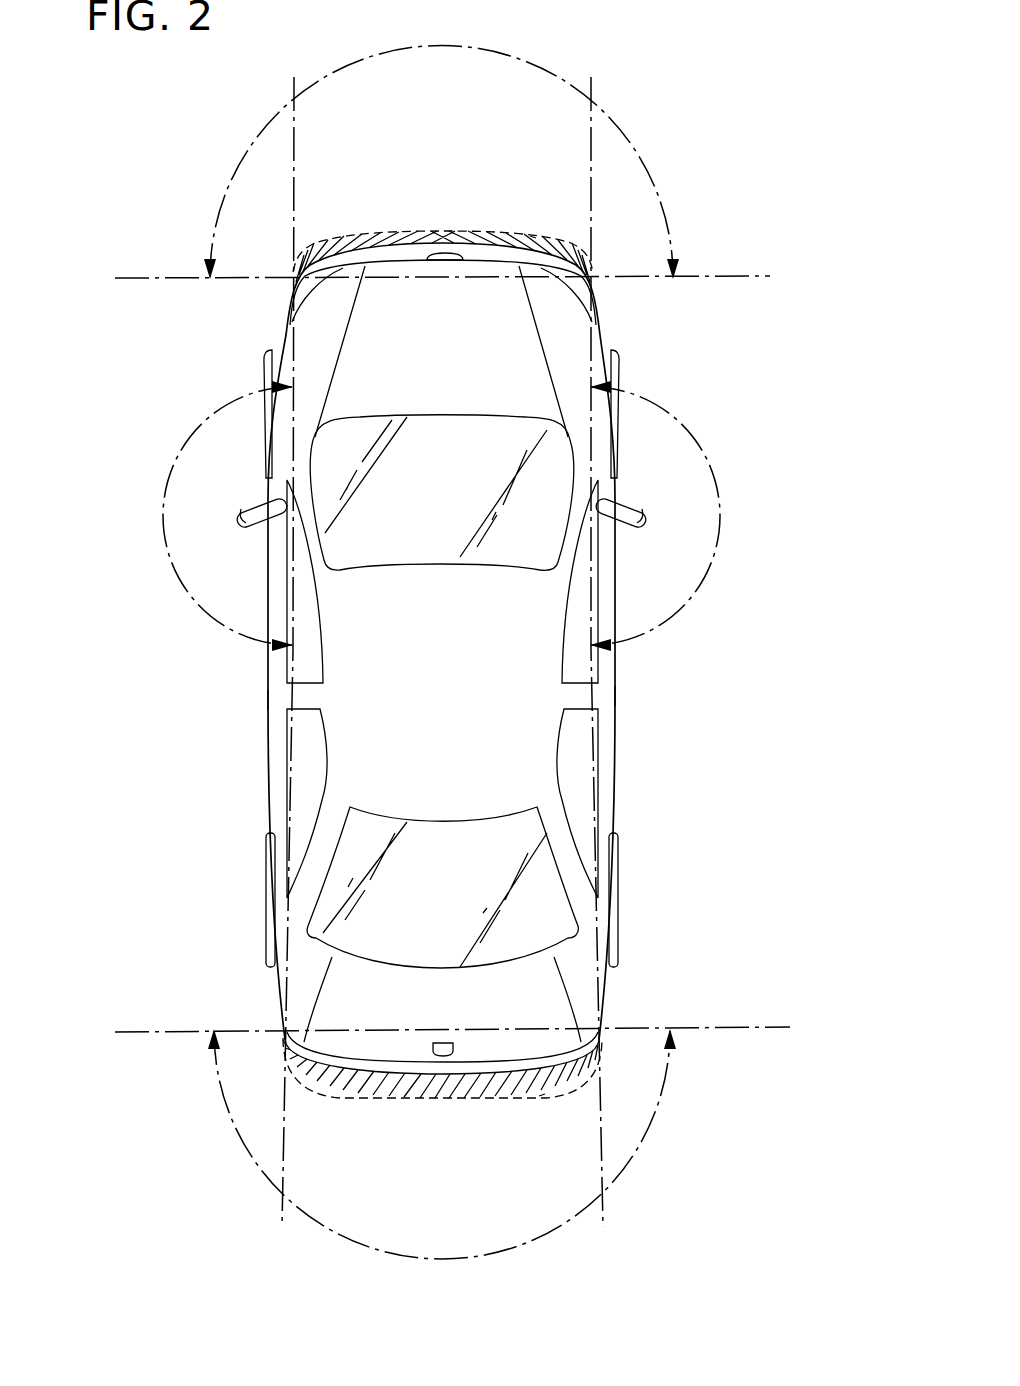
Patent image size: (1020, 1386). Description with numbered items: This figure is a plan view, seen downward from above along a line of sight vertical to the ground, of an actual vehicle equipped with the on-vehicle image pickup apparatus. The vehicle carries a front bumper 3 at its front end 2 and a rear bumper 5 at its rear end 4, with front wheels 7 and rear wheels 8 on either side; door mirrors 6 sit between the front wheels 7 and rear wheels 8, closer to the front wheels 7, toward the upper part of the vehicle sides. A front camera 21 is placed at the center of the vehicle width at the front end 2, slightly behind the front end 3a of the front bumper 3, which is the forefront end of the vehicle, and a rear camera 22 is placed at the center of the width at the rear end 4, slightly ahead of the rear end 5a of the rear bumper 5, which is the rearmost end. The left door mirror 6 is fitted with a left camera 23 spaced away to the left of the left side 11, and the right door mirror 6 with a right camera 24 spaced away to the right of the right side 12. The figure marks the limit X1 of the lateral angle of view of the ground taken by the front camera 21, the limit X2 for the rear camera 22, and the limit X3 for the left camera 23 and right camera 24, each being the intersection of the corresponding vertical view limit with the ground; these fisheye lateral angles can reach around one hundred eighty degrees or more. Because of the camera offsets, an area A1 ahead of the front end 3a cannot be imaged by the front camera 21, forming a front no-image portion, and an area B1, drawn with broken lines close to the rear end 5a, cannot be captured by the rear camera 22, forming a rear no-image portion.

The front end 2 is at (441, 267).
The front bumper 3 is at (367, 259).
The front end of the front bumper 3a is at (410, 232).
The rear end 4 is at (382, 1041).
The rear bumper 5 is at (500, 1066).
The rear end of the rear bumper 5a is at (433, 1096).
The door mirror 6 is at (638, 526).
The front wheel 7 is at (616, 365).
The rear wheel 8 is at (621, 908).
The left side 11 is at (266, 700).
The right side 12 is at (619, 696).
The front camera 21 is at (439, 256).
The rear camera 22 is at (443, 1043).
The left camera 23 is at (250, 503).
The right camera 24 is at (640, 503).
The front no-image portion A1 is at (533, 236).
The rear no-image portion B1 is at (542, 1096).
The limit of the lateral angle of view of the front camera X1 is at (735, 276).
The limit of the lateral angle of view of the rear camera X2 is at (771, 1038).
The limit of the lateral angle of view of the side cameras X3 is at (603, 1152).